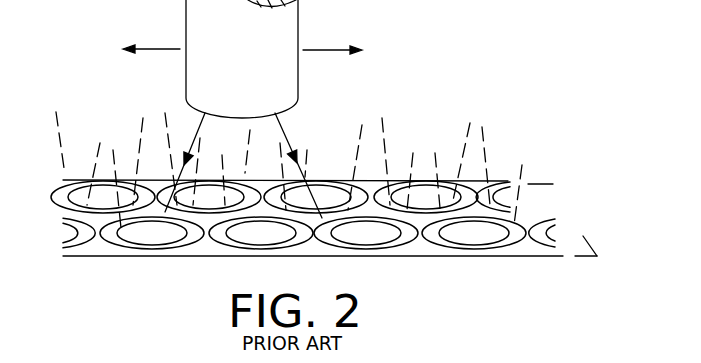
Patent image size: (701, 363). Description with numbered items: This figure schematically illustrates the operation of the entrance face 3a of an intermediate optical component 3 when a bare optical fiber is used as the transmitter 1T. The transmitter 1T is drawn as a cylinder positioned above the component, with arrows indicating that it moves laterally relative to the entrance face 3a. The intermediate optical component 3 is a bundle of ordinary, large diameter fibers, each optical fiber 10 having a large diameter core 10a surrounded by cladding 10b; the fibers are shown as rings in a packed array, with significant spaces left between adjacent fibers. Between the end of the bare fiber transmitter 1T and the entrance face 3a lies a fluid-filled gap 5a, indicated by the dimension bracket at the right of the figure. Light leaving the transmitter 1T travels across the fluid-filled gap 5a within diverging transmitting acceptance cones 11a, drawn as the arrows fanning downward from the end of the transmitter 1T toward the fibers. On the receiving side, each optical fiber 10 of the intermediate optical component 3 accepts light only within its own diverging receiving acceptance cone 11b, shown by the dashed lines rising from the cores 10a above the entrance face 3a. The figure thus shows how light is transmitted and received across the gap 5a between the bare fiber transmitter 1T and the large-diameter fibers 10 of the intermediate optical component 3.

The transmitter 1T is at (249, 66).
The intermediate optical component 3 is at (348, 218).
The entrance face 3a is at (553, 186).
The fluid-filled gap 5a is at (527, 105).
The optical fiber 10 is at (303, 233).
The core 10a is at (357, 237).
The cladding 10b is at (403, 250).
The transmitting acceptance cone 11a is at (283, 117).
The receiving acceptance cone 11b is at (222, 228).